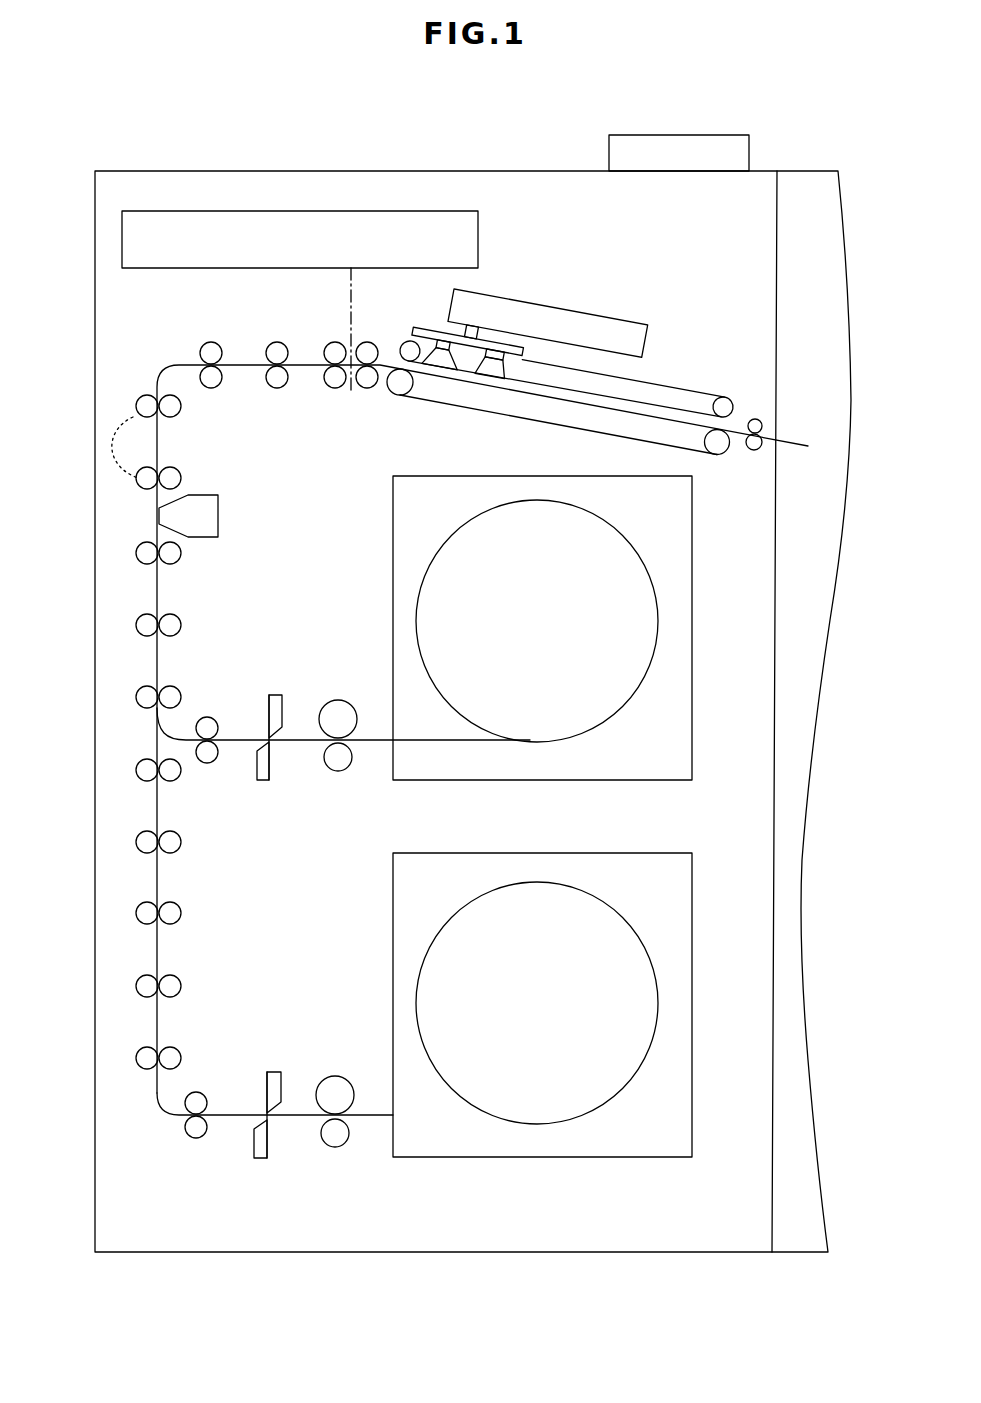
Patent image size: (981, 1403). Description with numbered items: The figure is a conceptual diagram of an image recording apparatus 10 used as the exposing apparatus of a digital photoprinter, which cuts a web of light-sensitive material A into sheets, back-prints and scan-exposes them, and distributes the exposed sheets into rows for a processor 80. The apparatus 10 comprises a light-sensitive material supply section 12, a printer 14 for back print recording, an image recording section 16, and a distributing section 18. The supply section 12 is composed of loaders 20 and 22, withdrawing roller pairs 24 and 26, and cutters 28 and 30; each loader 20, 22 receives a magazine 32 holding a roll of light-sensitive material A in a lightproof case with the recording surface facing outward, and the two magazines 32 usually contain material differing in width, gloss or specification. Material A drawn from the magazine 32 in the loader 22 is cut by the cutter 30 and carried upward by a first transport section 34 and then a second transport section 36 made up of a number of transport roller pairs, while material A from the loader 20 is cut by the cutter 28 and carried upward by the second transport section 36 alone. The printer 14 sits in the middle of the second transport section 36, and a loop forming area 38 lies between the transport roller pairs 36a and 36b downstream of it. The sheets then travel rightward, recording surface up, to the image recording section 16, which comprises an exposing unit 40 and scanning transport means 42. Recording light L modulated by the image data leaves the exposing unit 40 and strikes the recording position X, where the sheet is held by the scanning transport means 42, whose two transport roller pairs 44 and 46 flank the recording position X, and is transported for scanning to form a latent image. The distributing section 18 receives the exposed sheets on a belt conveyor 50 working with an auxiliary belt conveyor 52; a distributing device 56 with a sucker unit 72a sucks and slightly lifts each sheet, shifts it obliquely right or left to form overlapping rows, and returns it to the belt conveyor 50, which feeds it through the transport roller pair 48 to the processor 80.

The image recording apparatus 10 is at (661, 112).
The light-sensitive material supply section 12 is at (680, 817).
The printer 14 is at (205, 515).
The image recording section 16 is at (183, 319).
The distributing section 18 is at (609, 370).
The loader 20 is at (610, 628).
The loader 22 is at (690, 1058).
The withdrawing roller pair 24 is at (336, 712).
The withdrawing roller pair 26 is at (335, 1095).
The cutter 28 is at (268, 787).
The cutter 30 is at (275, 1078).
The magazine 32 is at (692, 687).
The first transport section 34 is at (207, 919).
The second transport section 36 is at (148, 729).
The transport roller pair 36a is at (143, 407).
The transport roller pair 36b is at (143, 478).
The loop forming area 38 is at (172, 436).
The exposing unit 40 is at (421, 238).
The scanning transport means 42 is at (356, 400).
The transport roller pair 44 is at (335, 381).
The transport roller pair 46 is at (370, 352).
The transport roller pair 48 is at (762, 423).
The belt conveyor 50 is at (673, 453).
The auxiliary belt conveyor 52 is at (573, 337).
The distributing device 56 is at (547, 296).
The sucker unit 72a is at (463, 382).
The processor 80 is at (798, 1220).
The light-sensitive material A is at (158, 875).
The recording light L is at (348, 304).
The recording position X is at (351, 394).